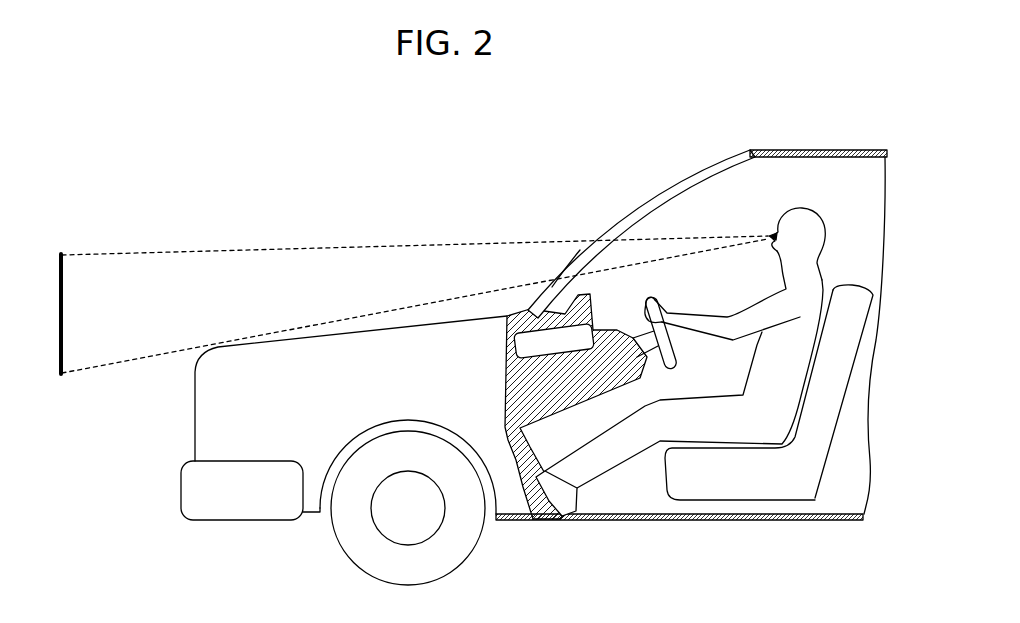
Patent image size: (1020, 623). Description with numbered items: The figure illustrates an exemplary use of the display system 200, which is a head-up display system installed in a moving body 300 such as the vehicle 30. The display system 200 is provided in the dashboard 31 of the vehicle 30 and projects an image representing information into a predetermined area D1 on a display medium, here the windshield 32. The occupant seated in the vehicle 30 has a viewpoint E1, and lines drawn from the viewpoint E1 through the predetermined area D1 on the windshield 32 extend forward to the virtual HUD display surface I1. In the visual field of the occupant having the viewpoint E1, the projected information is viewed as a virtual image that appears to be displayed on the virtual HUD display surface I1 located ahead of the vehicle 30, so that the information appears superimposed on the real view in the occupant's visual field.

The windshield 32 is at (707, 171).
The predetermined area D1 is at (563, 272).
The viewpoint E1 is at (772, 232).
The virtual HUD display surface I1 is at (62, 254).
The display system 200 is at (528, 346).
The dashboard 31 is at (583, 388).
The vehicle 30 is at (679, 549).
The moving body 300 is at (732, 521).